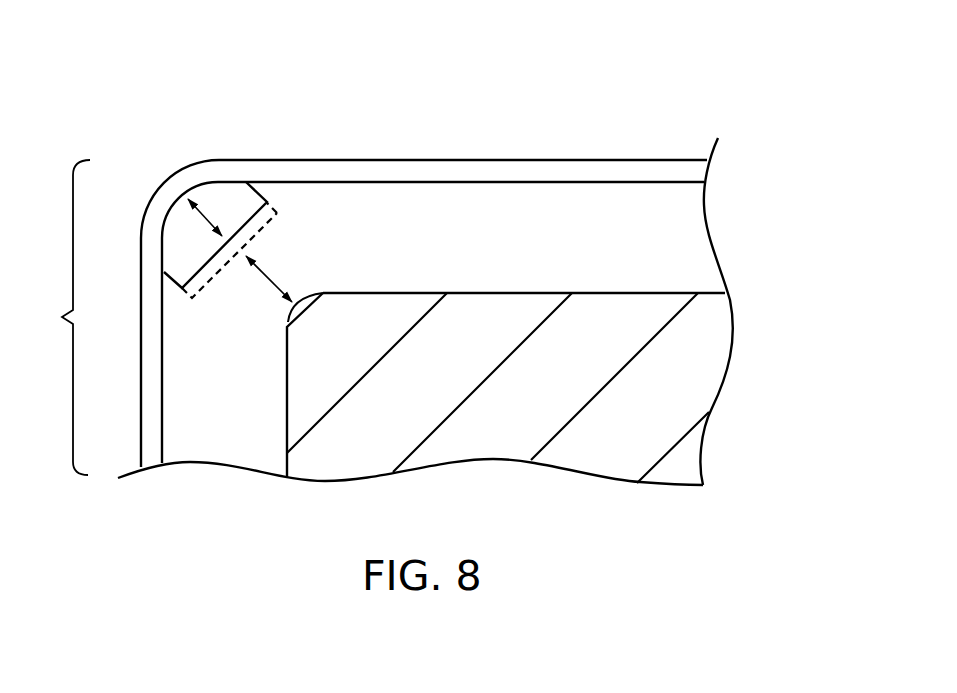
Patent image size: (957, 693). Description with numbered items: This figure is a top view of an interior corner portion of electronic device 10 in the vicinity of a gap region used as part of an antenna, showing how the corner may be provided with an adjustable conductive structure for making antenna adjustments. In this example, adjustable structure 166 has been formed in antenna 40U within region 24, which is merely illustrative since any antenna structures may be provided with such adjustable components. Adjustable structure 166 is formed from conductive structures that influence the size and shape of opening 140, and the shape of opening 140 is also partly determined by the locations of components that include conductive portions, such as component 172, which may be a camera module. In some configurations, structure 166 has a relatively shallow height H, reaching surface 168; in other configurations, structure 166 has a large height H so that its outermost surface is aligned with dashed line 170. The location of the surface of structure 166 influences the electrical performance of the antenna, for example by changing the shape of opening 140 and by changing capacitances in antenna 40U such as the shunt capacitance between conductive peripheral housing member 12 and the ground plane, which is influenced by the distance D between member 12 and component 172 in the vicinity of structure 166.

The electronic device 10 is at (146, 96).
The conductive peripheral housing member 12 is at (523, 160).
The region 24 is at (59, 317).
The adjustable structure 166 is at (243, 198).
The surface 168 is at (247, 236).
The dashed line 170 is at (270, 225).
The opening 140 is at (597, 247).
The component 172 is at (477, 293).
The antenna 40U is at (797, 292).